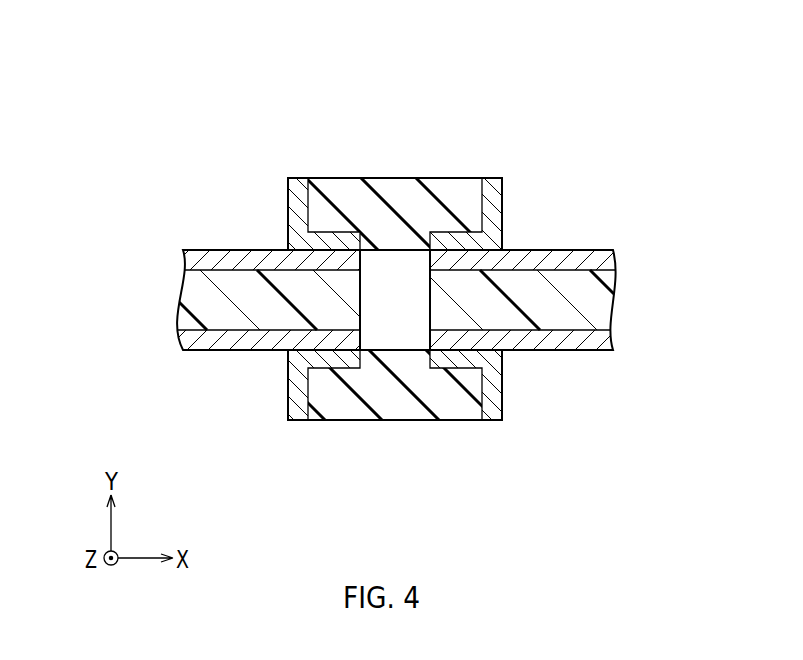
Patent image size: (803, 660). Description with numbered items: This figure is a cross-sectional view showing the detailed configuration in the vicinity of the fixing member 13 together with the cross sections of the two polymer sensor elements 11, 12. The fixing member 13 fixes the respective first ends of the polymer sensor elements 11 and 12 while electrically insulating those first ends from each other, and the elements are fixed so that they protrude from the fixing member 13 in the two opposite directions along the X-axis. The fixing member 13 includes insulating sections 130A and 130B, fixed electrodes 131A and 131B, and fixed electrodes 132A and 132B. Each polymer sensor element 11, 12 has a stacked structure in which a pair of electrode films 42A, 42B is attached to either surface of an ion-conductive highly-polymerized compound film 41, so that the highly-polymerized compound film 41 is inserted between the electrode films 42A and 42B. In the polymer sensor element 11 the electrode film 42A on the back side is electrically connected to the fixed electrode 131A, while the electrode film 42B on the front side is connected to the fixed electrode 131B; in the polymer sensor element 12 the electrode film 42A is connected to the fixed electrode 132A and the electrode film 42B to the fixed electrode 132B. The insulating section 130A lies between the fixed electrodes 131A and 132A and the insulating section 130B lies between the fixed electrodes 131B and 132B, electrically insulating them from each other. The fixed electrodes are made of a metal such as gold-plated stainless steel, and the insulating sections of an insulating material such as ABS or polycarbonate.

The polymer sensor element 11 is at (211, 224).
The polymer sensor element 12 is at (577, 220).
The fixing member 13 is at (399, 260).
The highly-polymerized compound film 41 is at (177, 308).
The electrode film 42A is at (181, 341).
The electrode film 42B is at (181, 262).
The insulating section 130A is at (378, 421).
The insulating section 130B is at (375, 177).
The fixed electrode 131A is at (296, 421).
The fixed electrode 131B is at (291, 177).
The fixed electrode 132A is at (492, 421).
The fixed electrode 132B is at (489, 177).